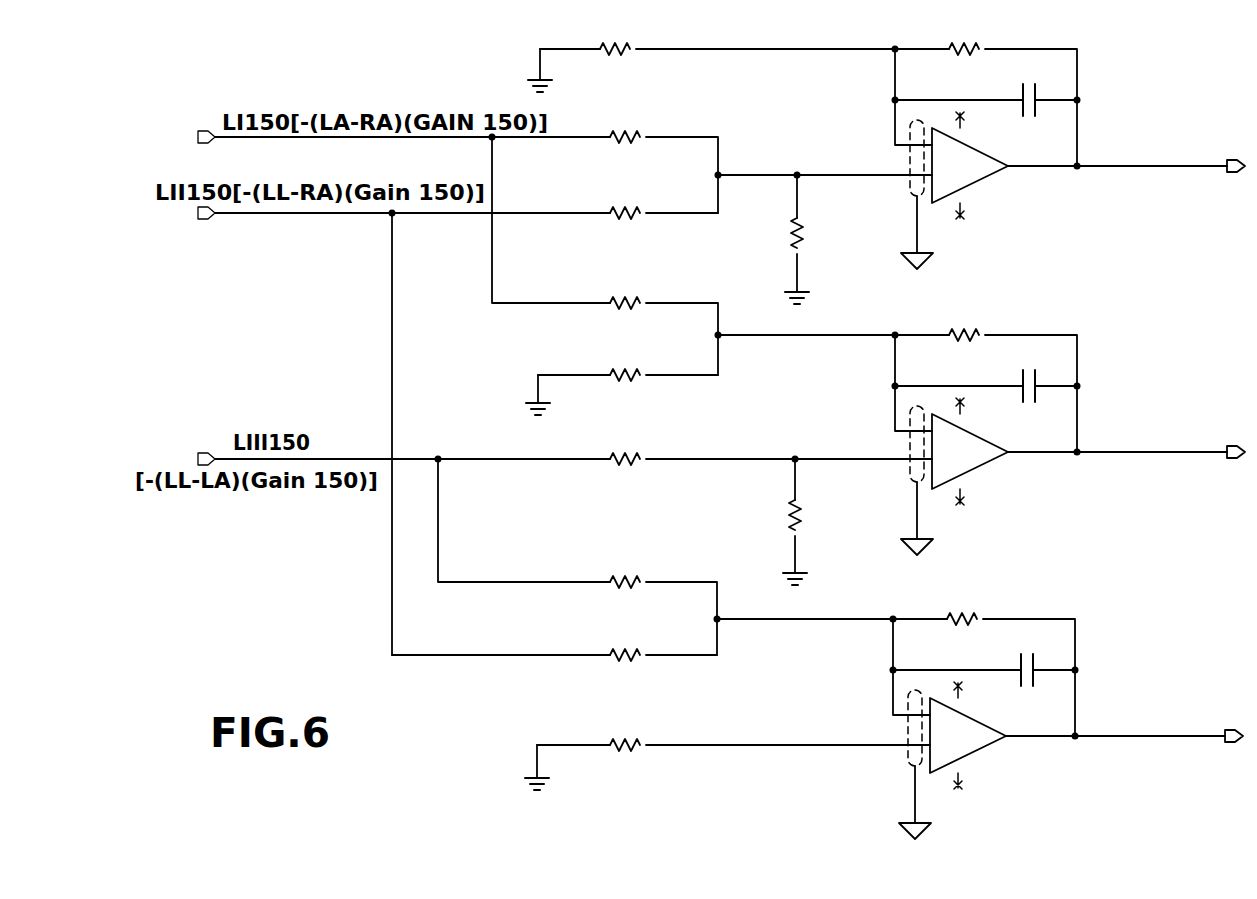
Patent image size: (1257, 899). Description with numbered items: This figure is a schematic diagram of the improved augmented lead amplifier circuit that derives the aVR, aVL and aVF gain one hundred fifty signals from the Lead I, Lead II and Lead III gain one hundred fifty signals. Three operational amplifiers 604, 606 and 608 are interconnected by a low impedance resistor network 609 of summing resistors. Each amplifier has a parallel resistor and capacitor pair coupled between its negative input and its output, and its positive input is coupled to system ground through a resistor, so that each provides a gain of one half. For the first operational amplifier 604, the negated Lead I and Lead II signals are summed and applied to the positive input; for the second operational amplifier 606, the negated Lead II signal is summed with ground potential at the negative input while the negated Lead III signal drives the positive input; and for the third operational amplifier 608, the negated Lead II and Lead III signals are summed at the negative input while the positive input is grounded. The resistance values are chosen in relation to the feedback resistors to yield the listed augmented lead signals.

The operational amplifier 604 is at (879, 149).
The operational amplifier 606 is at (875, 437).
The operational amplifier 608 is at (879, 719).
The augmented lead input resistor network 609 is at (374, 355).